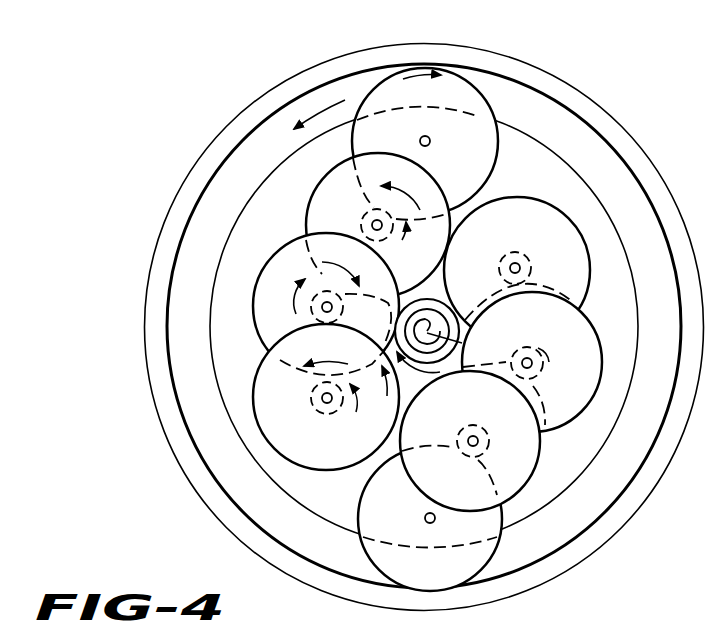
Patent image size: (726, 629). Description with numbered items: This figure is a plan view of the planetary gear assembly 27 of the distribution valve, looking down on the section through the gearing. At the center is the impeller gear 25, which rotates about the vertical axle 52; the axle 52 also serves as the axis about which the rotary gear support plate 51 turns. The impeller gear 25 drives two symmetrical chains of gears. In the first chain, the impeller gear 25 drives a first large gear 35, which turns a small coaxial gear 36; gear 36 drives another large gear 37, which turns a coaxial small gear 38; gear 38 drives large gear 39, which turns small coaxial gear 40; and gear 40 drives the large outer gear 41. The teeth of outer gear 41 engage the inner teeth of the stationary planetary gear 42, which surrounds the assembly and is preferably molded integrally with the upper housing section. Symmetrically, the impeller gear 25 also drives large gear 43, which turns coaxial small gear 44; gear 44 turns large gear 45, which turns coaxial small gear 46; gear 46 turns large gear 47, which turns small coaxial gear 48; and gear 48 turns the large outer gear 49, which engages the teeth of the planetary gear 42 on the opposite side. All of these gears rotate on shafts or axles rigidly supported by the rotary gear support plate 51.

The impeller gear 25 is at (443, 307).
The gear assembly 27 is at (508, 104).
The first large gear 35 is at (542, 270).
The small coaxial gear 36 is at (527, 250).
The large gear 37 is at (543, 361).
The coaxial small gear 38 is at (544, 371).
The large gear 39 is at (496, 441).
The small coaxial gear 40 is at (485, 430).
The large outer gear 41 is at (482, 563).
The stationary planetary gear 42 is at (617, 521).
The large gear 43 is at (326, 414).
The coaxial small gear 44 is at (331, 415).
The large gear 45 is at (318, 304).
The coaxial small gear 46 is at (252, 253).
The large gear 47 is at (358, 225).
The small coaxial gear 48 is at (358, 200).
The large outer gear 49 is at (393, 95).
The rotary gear support plate 51 is at (533, 156).
The vertical axle 52 is at (459, 347).